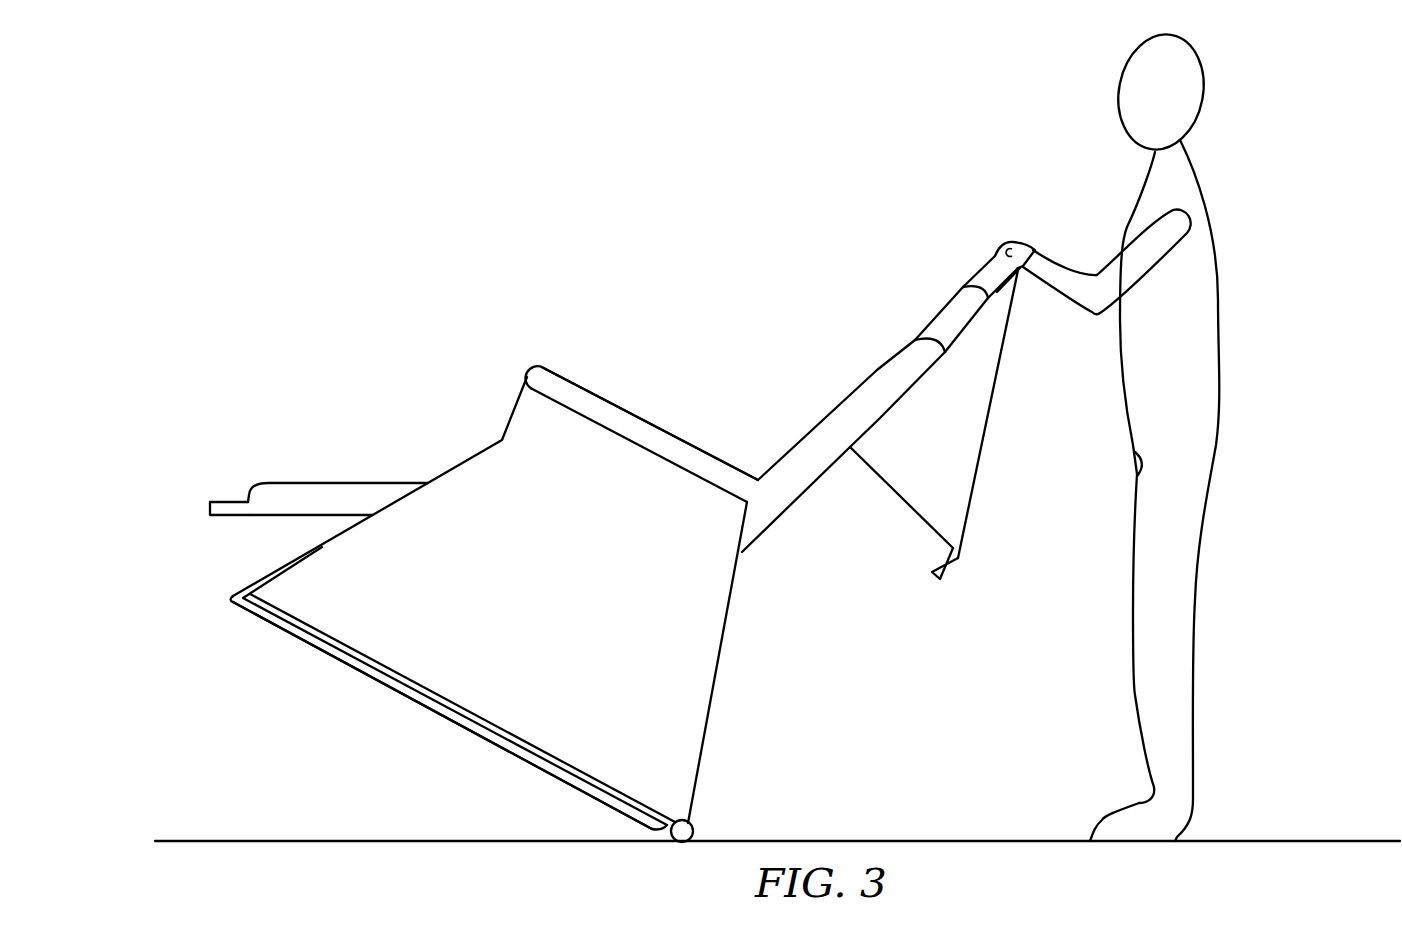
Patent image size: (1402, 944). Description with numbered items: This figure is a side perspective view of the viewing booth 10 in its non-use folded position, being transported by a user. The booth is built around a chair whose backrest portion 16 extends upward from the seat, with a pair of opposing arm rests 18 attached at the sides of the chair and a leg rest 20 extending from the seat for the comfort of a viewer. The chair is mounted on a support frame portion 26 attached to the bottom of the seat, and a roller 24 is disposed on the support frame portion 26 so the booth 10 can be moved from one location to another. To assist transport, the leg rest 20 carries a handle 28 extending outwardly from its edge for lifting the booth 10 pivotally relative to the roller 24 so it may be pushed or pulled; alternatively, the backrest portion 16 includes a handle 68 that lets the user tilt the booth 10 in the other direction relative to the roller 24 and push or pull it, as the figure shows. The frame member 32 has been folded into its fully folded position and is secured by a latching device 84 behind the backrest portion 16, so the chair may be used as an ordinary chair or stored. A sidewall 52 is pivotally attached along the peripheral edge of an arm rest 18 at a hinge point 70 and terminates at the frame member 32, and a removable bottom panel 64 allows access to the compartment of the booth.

The viewing booth 10 is at (360, 222).
The backrest portion 16 is at (780, 517).
The arm rests 18 is at (523, 376).
The leg rest 20 is at (288, 483).
The roller 24 is at (693, 827).
The support frame portion 26 is at (253, 580).
The handle 28 is at (210, 505).
The frame member 32 is at (983, 458).
The sidewall 52 is at (698, 667).
The bottom panel 64 is at (307, 643).
The handle 68 is at (1008, 247).
The hinge point 70 is at (620, 437).
The latching device 84 is at (852, 450).